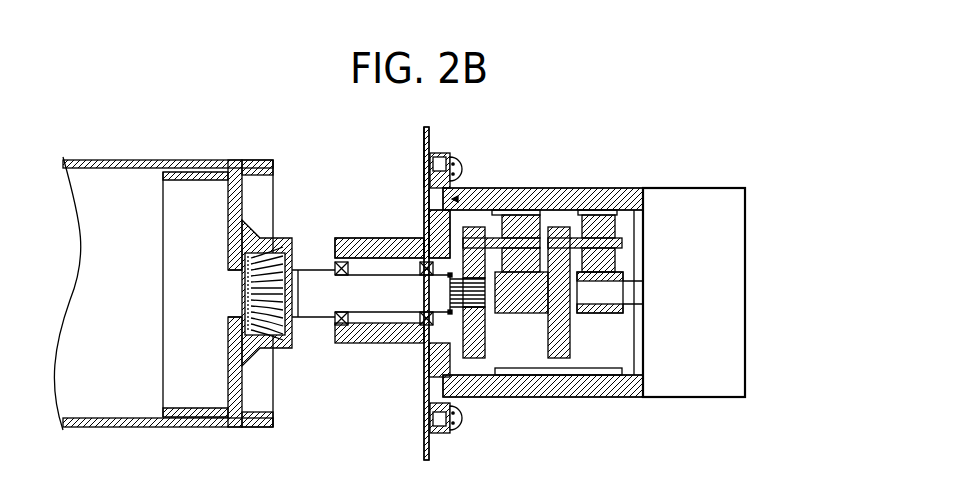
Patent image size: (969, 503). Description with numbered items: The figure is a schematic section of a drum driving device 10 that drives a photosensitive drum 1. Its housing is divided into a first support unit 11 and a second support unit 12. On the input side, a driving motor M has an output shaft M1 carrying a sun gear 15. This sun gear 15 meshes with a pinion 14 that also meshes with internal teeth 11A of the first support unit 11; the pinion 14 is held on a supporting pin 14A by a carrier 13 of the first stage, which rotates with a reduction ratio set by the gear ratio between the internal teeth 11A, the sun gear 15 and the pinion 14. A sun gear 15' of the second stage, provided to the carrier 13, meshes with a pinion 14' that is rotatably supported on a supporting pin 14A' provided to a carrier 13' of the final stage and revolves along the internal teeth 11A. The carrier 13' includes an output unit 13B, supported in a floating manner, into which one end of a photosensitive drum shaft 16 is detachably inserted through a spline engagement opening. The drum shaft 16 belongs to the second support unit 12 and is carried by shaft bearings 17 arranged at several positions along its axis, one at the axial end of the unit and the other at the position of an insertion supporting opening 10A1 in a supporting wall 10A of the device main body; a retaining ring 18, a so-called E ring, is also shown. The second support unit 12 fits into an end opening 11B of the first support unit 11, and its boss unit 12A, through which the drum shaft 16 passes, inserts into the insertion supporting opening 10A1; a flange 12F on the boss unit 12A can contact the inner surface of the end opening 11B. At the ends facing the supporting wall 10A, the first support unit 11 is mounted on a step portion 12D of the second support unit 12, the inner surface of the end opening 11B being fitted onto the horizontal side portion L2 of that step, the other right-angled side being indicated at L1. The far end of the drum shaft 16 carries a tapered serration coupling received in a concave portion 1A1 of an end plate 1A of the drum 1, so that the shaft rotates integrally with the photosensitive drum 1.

The photosensitive drum 1 is at (118, 160).
The end plate 1A is at (237, 163).
The concave portion 1A1 is at (270, 250).
The drum driving device 10 is at (490, 108).
The supporting wall 10A is at (425, 443).
The insertion supporting opening 10A1 is at (418, 337).
The first support unit 11 is at (478, 188).
The internal teeth 11A is at (583, 217).
The end opening 11B is at (447, 368).
The second support unit 12 is at (342, 238).
The boss unit 12A is at (362, 247).
The flange 12F is at (433, 233).
The step portion 12D is at (457, 173).
The carrier of the first stage 13 is at (570, 328).
The carrier of the final stage 13' is at (484, 328).
The output unit 13B is at (477, 300).
The pinion 14 is at (599, 217).
The pinion 14' is at (521, 217).
The supporting pin 14A is at (611, 205).
The supporting pin 14A' is at (517, 205).
The sun gear 15 is at (600, 310).
The sun gear of the second stage 15' is at (521, 309).
The photosensitive drum shaft 16 is at (368, 305).
The shaft bearing 17 is at (418, 318).
The retaining ring 18 is at (437, 277).
The reference plane L1 is at (428, 182).
The side portion along the horizontal direction L2 is at (427, 210).
The driving motor M is at (740, 210).
The output shaft M1 is at (630, 292).